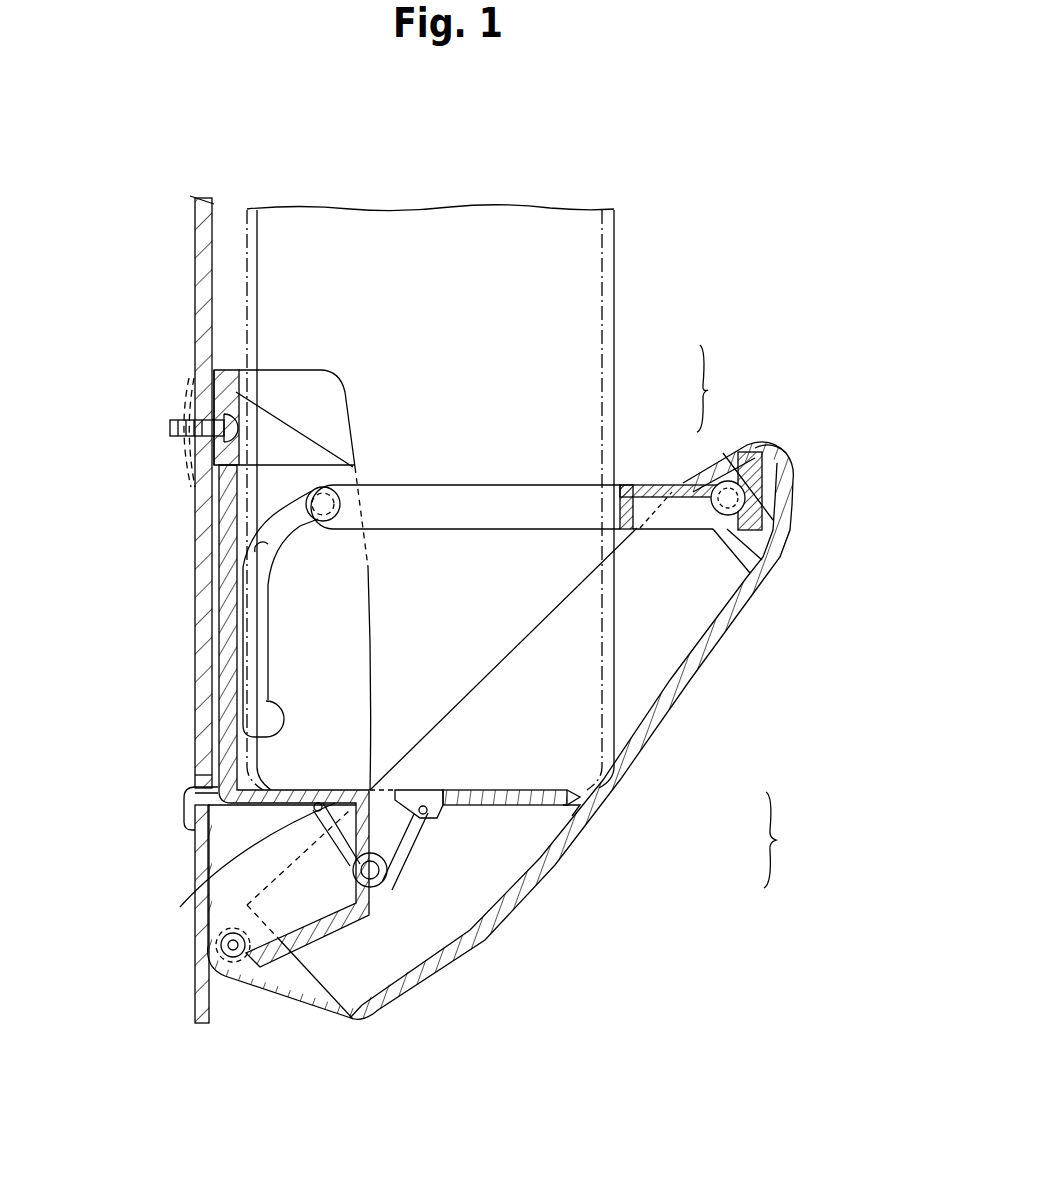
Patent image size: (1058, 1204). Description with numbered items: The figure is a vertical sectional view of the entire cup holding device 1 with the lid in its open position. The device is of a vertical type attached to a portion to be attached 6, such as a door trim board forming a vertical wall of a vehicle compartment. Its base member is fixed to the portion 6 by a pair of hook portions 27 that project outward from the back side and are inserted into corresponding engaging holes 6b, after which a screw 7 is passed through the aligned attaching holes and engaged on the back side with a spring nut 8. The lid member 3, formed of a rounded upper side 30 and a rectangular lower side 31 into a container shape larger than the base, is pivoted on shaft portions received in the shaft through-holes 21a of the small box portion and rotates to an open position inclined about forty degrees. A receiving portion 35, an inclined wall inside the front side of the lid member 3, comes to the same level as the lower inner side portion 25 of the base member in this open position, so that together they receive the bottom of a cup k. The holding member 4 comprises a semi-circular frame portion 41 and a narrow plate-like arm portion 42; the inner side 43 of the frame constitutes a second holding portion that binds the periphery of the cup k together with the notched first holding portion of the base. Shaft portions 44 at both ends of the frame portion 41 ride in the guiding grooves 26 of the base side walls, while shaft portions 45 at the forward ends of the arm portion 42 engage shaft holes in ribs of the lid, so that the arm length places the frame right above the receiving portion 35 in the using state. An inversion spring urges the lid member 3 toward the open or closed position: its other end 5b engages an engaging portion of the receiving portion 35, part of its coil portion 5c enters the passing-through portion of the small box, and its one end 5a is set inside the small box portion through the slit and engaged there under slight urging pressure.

The cup holding device 1 is at (733, 348).
The lid member 3 is at (783, 840).
The holding member 4 is at (716, 388).
The one end of the inversion spring 5a is at (180, 907).
The other end of the inversion spring 5b is at (427, 815).
The coil portion 5c is at (410, 968).
The portion to be attached 6 is at (207, 232).
The engaging holes 6b is at (192, 780).
The screw 7 is at (170, 428).
The spring nut 8 is at (192, 400).
The shaft through-holes 21a is at (245, 960).
The lower inner side portion 25 is at (312, 790).
The guiding grooves 26 is at (248, 570).
The hook portions 27 is at (184, 820).
The rounded upper side 30 is at (710, 670).
The rectangular lower side 31 is at (545, 866).
The receiving portion 35 is at (481, 786).
The frame portion 41 is at (552, 500).
The arm portion 42 is at (640, 482).
The inner side of the frame portion 43 is at (470, 496).
The shaft portions of the frame portion 44 is at (332, 490).
The shaft portions of the arm portion 45 is at (762, 451).
The cup k is at (578, 230).